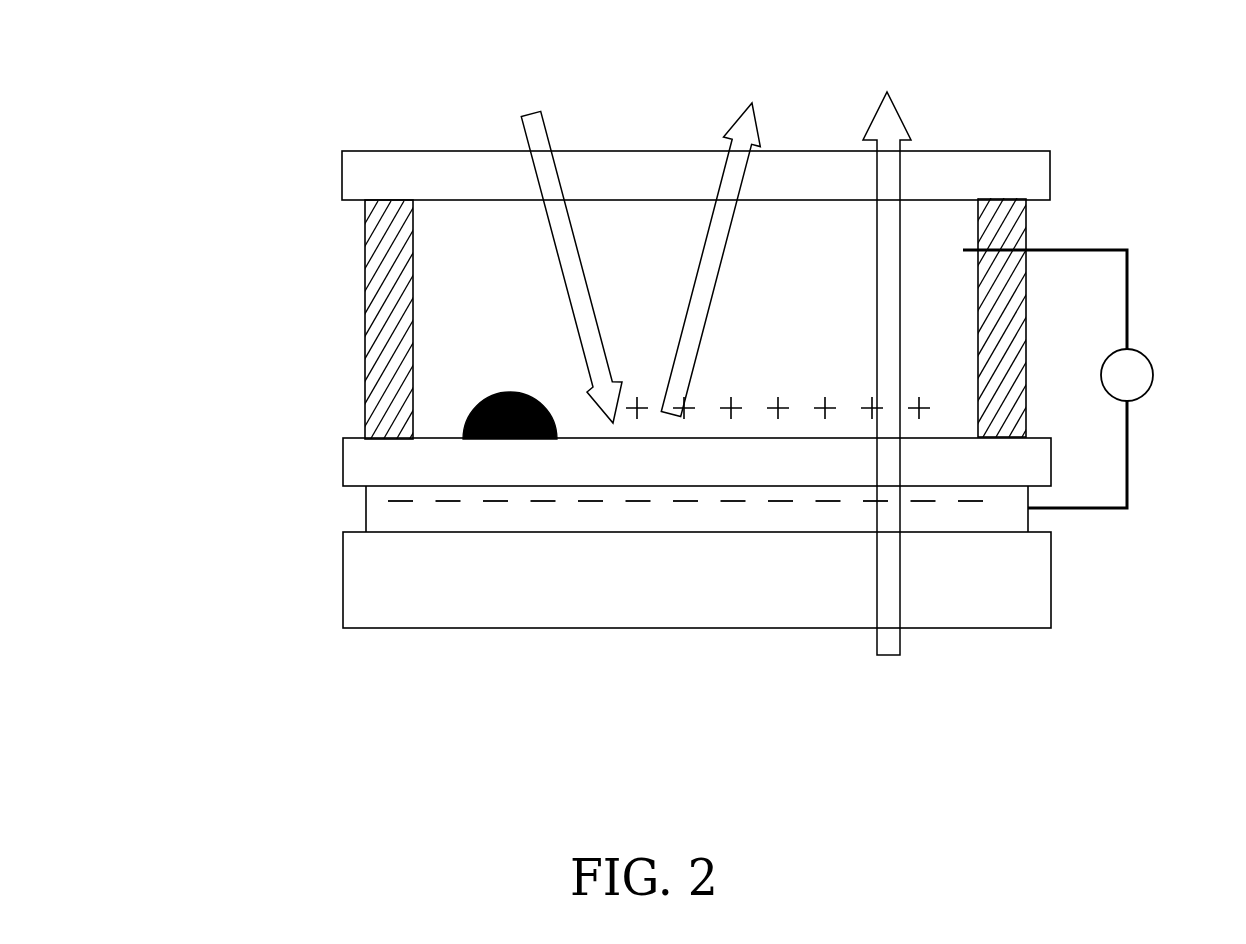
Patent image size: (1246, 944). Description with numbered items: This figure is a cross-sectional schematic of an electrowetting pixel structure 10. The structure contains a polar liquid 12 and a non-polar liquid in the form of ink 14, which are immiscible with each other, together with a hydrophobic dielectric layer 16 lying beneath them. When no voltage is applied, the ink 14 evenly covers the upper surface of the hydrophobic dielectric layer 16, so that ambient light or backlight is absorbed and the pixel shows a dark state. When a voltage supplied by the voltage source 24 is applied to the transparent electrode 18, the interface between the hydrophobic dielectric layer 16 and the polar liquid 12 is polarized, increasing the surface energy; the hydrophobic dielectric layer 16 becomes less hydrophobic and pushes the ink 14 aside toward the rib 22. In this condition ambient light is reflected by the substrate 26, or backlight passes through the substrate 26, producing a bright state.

The electrowetting pixel structure 10 is at (173, 36).
The polar liquid 12 is at (440, 320).
The ink 14 is at (478, 404).
The hydrophobic dielectric layer 16 is at (363, 463).
The transparent electrode 18 is at (685, 522).
The rib 22 is at (378, 368).
The voltage source 24 is at (1142, 348).
The substrate 26 is at (367, 598).